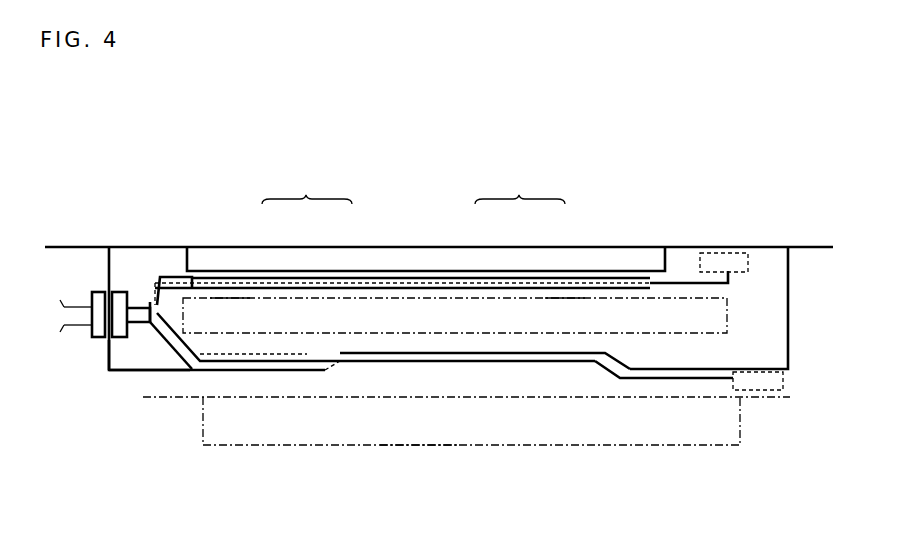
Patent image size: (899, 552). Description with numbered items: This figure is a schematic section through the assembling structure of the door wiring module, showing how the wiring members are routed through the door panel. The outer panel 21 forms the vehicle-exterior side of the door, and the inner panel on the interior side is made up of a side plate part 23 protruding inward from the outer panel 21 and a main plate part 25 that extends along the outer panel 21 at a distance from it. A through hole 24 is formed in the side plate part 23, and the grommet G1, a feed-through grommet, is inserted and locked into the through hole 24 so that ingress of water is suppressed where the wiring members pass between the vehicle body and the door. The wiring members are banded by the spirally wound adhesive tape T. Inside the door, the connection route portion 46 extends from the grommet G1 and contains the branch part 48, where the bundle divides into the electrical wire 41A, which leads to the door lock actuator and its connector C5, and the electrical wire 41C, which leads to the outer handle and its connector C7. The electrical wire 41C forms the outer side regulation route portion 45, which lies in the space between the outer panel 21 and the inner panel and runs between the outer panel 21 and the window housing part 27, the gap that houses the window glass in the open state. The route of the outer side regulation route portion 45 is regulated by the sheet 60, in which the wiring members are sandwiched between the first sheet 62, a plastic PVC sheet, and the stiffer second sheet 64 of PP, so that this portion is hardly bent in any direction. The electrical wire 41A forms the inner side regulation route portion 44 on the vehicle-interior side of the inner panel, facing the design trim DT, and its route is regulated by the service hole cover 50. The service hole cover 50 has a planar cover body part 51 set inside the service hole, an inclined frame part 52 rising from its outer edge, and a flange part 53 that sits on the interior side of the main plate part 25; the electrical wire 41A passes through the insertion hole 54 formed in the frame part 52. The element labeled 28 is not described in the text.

The outer panel 21 is at (72, 245).
The side plate part 23 is at (108, 267).
The through hole 24 is at (102, 345).
The main plate part 25 is at (111, 373).
The window housing part 27 is at (727, 323).
The terminal portion 28 is at (170, 276).
The adhesive tape T is at (156, 290).
The branch part 48 is at (143, 296).
The grommet G1 is at (80, 333).
The connection route portion 46 is at (162, 355).
The flange part 53 is at (333, 368).
The insertion hole 54 is at (342, 372).
The service hole cover 50 is at (370, 348).
The cover body part 51 is at (404, 350).
The frame part 52 is at (618, 362).
The outer side regulation route portion 45 is at (232, 302).
The sheet 60 is at (413, 189).
The second sheet 64 is at (283, 277).
The first sheet 62 is at (338, 287).
The electrical wire 41C is at (681, 282).
The connector C7 is at (726, 253).
The connector C5 is at (783, 378).
The inner side regulation route portion 44 is at (500, 372).
The electrical wire 41A is at (698, 400).
The design trim DT is at (418, 455).